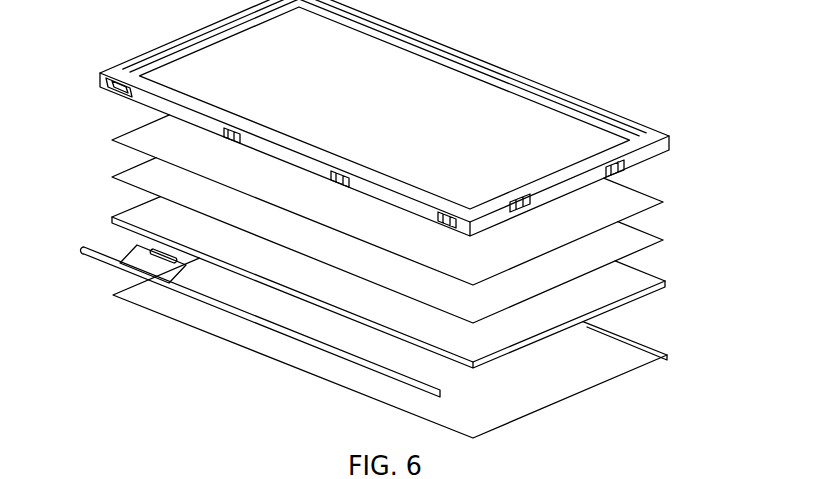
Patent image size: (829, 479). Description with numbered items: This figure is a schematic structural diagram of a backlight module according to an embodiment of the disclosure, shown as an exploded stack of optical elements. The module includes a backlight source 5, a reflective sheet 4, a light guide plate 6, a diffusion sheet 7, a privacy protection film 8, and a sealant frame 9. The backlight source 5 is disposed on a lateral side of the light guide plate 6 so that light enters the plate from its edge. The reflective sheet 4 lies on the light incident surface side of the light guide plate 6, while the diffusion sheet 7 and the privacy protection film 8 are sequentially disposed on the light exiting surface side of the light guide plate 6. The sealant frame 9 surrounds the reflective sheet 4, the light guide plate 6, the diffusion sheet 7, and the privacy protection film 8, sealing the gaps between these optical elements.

The sealant frame 9 is at (672, 142).
The privacy protection film 8 is at (663, 202).
The diffusion sheet 7 is at (663, 240).
The light guide plate 6 is at (666, 281).
The backlight source 5 is at (97, 256).
The reflective sheet 4 is at (667, 357).